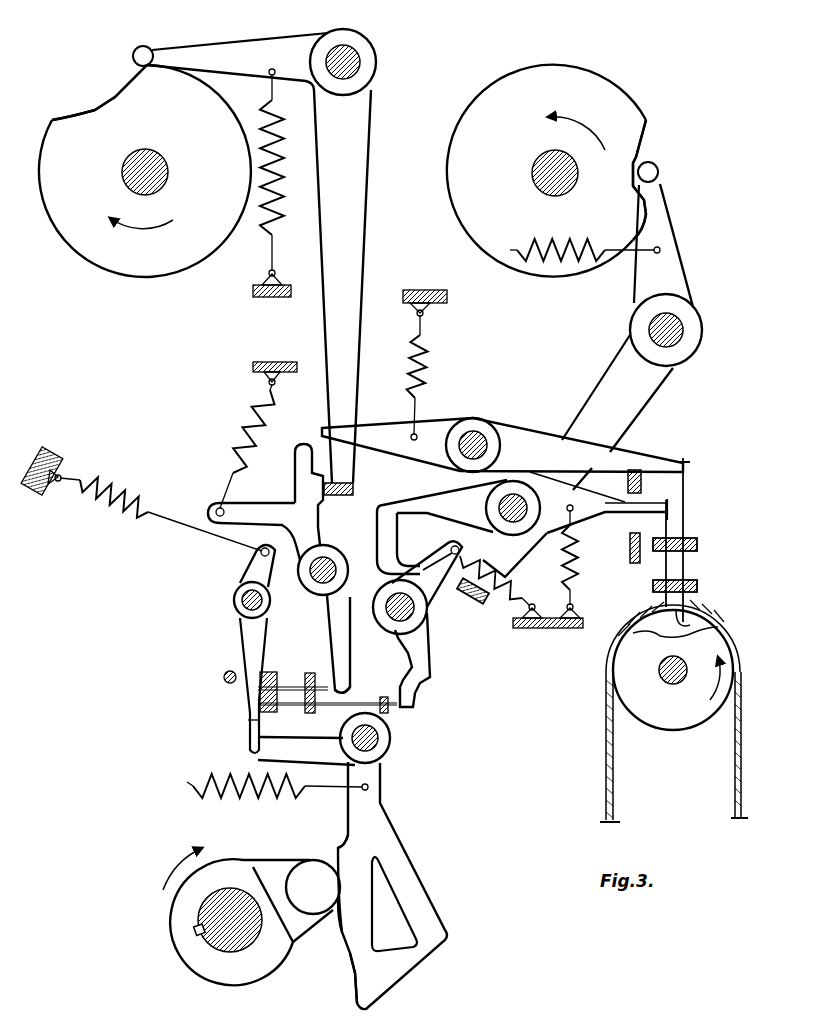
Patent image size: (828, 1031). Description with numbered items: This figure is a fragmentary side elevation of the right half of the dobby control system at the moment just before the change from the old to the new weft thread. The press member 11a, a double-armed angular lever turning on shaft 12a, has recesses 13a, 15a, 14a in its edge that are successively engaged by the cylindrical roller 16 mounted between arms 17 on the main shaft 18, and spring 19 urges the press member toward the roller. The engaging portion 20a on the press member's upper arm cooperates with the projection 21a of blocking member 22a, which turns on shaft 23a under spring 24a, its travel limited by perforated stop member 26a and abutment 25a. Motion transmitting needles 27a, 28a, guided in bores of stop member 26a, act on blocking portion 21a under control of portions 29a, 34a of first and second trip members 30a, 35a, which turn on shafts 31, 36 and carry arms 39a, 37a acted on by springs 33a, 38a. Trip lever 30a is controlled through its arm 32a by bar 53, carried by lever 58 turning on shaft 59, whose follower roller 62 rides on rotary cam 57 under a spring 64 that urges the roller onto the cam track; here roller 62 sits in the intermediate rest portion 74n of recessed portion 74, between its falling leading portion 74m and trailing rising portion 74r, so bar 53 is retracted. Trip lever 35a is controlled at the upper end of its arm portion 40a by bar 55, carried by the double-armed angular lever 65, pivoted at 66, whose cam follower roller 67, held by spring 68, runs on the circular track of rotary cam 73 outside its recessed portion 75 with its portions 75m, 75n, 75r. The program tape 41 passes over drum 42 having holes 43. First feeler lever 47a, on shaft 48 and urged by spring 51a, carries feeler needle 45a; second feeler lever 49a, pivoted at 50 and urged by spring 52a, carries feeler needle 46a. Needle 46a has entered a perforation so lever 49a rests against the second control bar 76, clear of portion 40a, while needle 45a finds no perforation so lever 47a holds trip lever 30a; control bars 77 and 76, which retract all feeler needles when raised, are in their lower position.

The press member 11a is at (392, 838).
The shaft 12a is at (382, 745).
The recess 13a is at (338, 847).
The recess 14a is at (355, 975).
The recess 15a is at (340, 928).
The cylindrical roller 16 is at (324, 896).
The arms 17 is at (192, 958).
The main shaft 18 is at (238, 928).
The spring 19 is at (258, 795).
The engaging portion 20a is at (256, 740).
The projection 21a is at (248, 717).
The blocking member 22a is at (252, 566).
The shaft 23a is at (236, 610).
The spring 24a is at (141, 499).
The abutment 25a is at (210, 680).
The perforated stop member 26a is at (268, 672).
The first motion transmitting needle 27a is at (392, 707).
The second motion transmitting needle 28a is at (305, 672).
The portion of first trip member 29a is at (415, 705).
The first trip member 30a is at (433, 657).
The shaft 31 is at (414, 614).
The arm 32a is at (430, 562).
The spring 33a is at (520, 615).
The portion of second trip member 34a is at (345, 672).
The second trip member 35a is at (352, 646).
The shaft 36 is at (310, 582).
The arm 37a is at (215, 508).
The spring 38a is at (247, 448).
The arm 39a is at (410, 493).
The arm portion 40a is at (305, 452).
The program tape 41 is at (613, 788).
The drum 42 is at (688, 721).
The perforations 43 is at (704, 613).
The feeler needle 45a is at (670, 567).
The feeler needle 46a is at (684, 522).
The first feeler lever 47a is at (588, 502).
The shaft 48 is at (520, 520).
The second feeler lever 49a is at (528, 437).
The pivot 50 is at (480, 432).
The spring 51a is at (576, 572).
The spring 52a is at (424, 386).
The bar 53 is at (493, 591).
The bar 55 is at (341, 501).
The rotary cam 57 is at (531, 139).
The lever 58 is at (670, 288).
The shaft 59 is at (683, 326).
The follower roller 62 is at (660, 175).
The spring 64 is at (596, 256).
The double-armed angular lever 65 is at (372, 128).
The pivot 66 is at (360, 62).
The cam follower roller 67 is at (150, 52).
The spring 68 is at (268, 240).
The rotary cam 73 is at (193, 141).
The recessed portion 74 is at (655, 186).
The falling leading portion 74m is at (645, 140).
The intermediate rest portion 74n is at (645, 160).
The trailing rising portion 74r is at (648, 213).
The recessed portion 75 is at (108, 92).
The falling leading portion 75m is at (128, 83).
The intermediate rest portion 75n is at (100, 104).
The trailing rising portion 75r is at (64, 116).
The second control bar 76 is at (643, 468).
The first control bar 77 is at (628, 552).